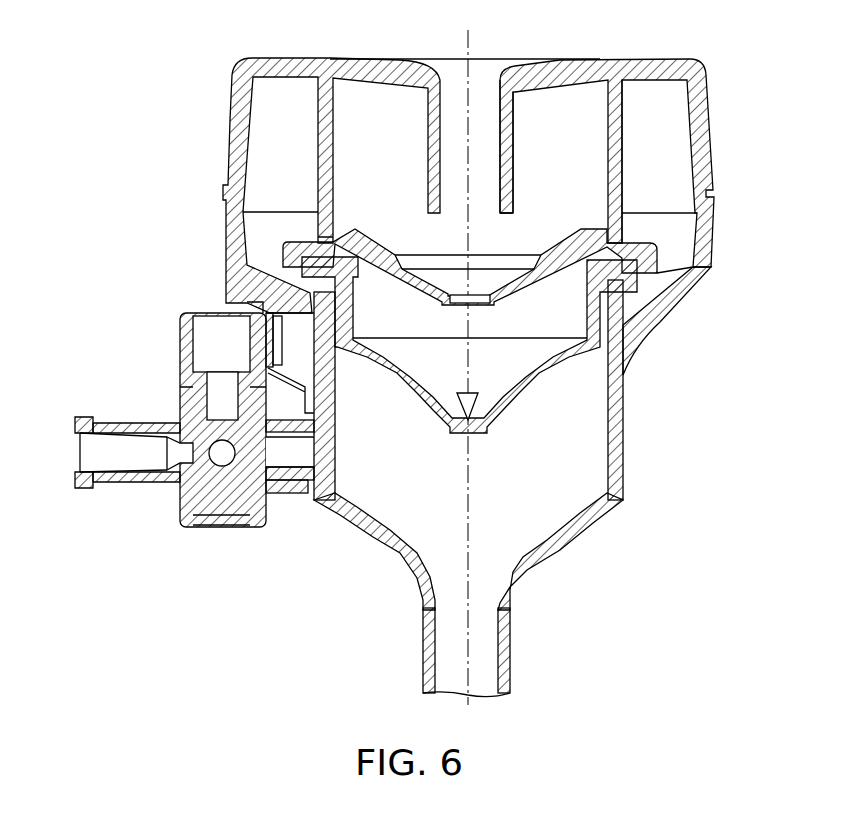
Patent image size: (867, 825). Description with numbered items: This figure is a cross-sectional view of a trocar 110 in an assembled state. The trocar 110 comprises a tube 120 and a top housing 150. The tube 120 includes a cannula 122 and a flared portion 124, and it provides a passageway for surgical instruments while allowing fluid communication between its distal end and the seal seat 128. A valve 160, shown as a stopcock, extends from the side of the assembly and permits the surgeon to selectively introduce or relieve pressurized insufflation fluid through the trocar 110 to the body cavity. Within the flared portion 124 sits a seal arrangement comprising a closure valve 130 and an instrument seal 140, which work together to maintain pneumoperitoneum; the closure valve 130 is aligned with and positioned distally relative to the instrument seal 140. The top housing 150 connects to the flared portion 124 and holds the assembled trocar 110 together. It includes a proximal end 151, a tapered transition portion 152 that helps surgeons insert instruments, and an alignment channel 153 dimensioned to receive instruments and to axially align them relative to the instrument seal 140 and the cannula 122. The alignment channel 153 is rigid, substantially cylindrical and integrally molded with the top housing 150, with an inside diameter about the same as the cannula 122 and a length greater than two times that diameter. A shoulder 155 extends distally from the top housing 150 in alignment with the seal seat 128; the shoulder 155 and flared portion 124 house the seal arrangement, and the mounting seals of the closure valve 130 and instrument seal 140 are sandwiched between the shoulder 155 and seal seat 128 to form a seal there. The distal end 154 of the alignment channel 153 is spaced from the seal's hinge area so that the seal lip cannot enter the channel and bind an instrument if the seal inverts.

The trocar 110 is at (163, 82).
The tube 120 is at (623, 502).
The cannula 122 is at (508, 677).
The flared portion 124 is at (625, 427).
The seal seat 128 is at (640, 322).
The closure valve 130 is at (422, 407).
The instrument seal 140 is at (387, 283).
The top housing 150 is at (713, 125).
The proximal end 151 is at (670, 59).
The tapered transition portion 152 is at (560, 59).
The alignment channel 153 is at (500, 148).
The distal end of the alignment channel 154 is at (517, 220).
The shoulder 155 is at (623, 167).
The valve 160 is at (192, 530).